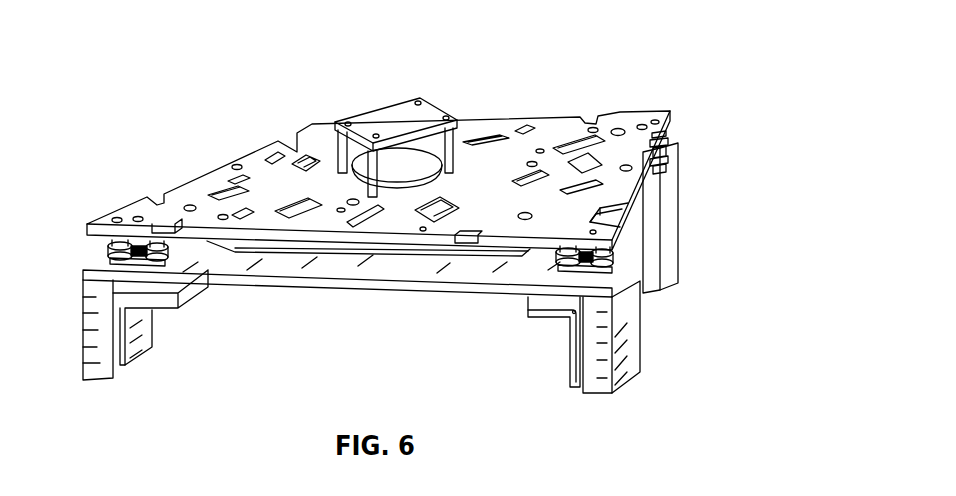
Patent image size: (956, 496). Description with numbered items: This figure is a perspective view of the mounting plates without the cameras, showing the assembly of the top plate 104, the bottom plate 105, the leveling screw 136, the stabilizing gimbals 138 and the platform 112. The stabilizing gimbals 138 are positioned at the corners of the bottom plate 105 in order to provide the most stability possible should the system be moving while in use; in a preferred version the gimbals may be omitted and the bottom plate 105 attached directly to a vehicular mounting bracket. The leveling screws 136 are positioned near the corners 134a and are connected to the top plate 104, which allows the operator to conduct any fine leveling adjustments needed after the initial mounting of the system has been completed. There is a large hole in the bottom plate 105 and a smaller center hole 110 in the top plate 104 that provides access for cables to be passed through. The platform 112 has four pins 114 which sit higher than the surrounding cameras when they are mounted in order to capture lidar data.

The top plate 104 is at (540, 137).
The bottom plate 105 is at (658, 150).
The center hole 110 is at (458, 119).
The platform 112 is at (396, 120).
The pins 114 is at (333, 175).
The leveling screw 136 is at (617, 263).
The corners 134a is at (612, 287).
The stabilizing gimbals 138 is at (633, 320).